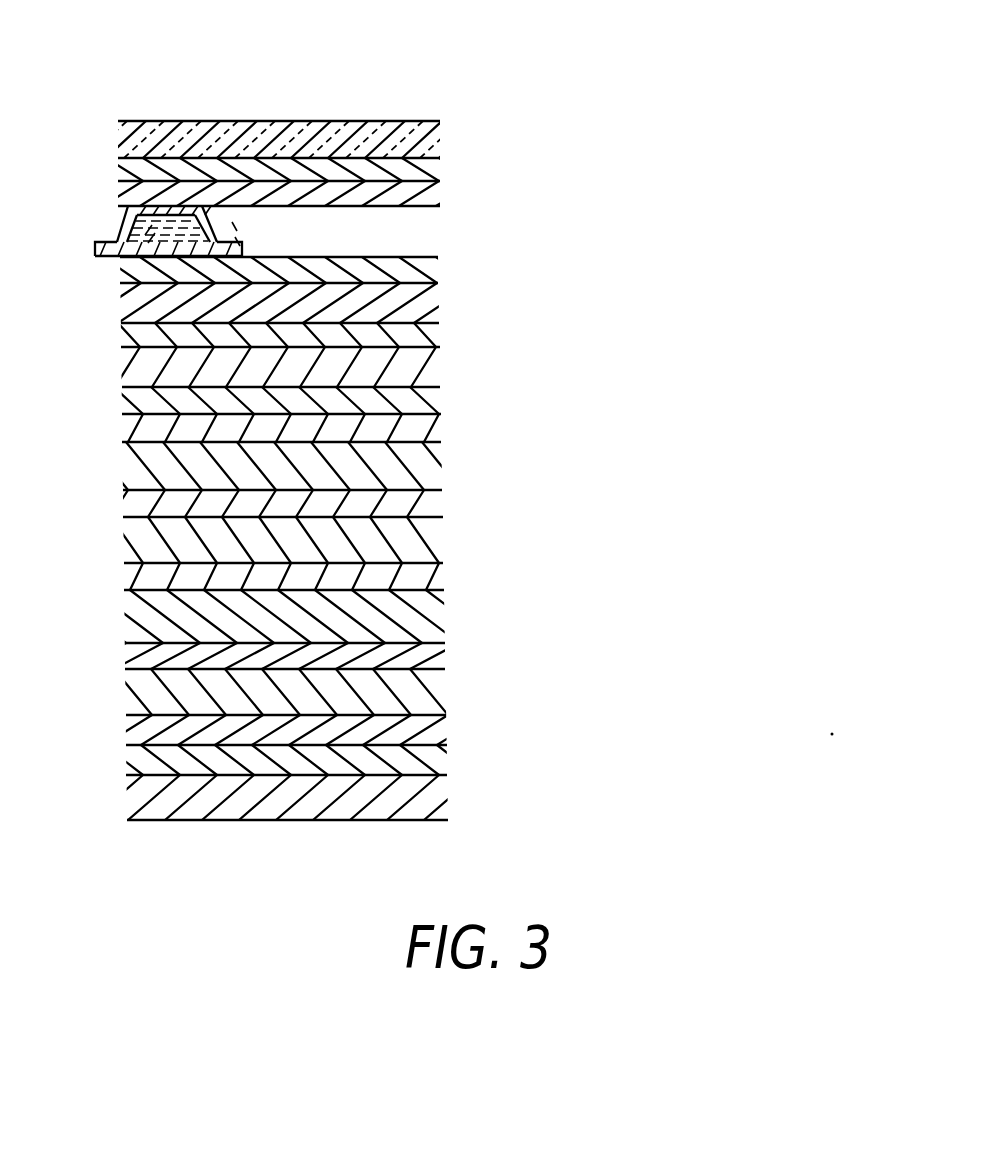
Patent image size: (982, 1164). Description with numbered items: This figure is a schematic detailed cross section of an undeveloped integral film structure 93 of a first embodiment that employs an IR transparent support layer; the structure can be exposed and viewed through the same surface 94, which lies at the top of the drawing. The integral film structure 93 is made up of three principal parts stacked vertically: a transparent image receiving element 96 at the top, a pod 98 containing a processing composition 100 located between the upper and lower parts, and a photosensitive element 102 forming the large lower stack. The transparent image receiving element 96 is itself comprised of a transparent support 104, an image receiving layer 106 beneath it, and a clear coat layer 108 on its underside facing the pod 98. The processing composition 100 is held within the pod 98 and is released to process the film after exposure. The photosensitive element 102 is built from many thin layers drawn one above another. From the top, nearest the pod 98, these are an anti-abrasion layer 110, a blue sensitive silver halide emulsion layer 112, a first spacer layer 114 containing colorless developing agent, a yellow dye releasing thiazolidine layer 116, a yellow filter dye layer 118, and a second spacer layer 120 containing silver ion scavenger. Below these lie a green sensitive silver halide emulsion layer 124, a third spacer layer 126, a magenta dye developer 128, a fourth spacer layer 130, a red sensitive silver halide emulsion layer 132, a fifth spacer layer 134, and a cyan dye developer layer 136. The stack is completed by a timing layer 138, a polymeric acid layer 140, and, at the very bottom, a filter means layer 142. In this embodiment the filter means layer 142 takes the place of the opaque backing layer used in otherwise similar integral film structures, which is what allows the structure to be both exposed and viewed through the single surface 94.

The integral film structure 93 is at (580, 44).
The surface 94 is at (338, 110).
The transparent image receiving element 96 is at (107, 118).
The pod 98 is at (124, 221).
The processing composition 100 is at (213, 222).
The photosensitive element 102 is at (100, 258).
The transparent support 104 is at (440, 141).
The image receiving layer 106 is at (440, 168).
The clear coat layer 108 is at (440, 188).
The anti-abrasion layer 110 is at (440, 272).
The blue sensitive silver halide emulsion layer 112 is at (440, 300).
The first spacer layer 114 is at (440, 336).
The yellow dye releasing thiazolidine layer 116 is at (440, 360).
The yellow filter dye layer 118 is at (440, 402).
The second spacer layer 120 is at (441, 423).
The green sensitive silver halide emulsion layer 124 is at (442, 470).
The third spacer layer 126 is at (443, 505).
The magenta dye developer 128 is at (443, 547).
The fourth spacer layer 130 is at (443, 575).
The red sensitive silver halide emulsion layer 132 is at (444, 617).
The fifth spacer layer 134 is at (446, 662).
The cyan dye developer layer 136 is at (445, 700).
The timing layer 138 is at (446, 728).
The polymeric acid layer 140 is at (447, 763).
The filter means layer 142 is at (448, 792).